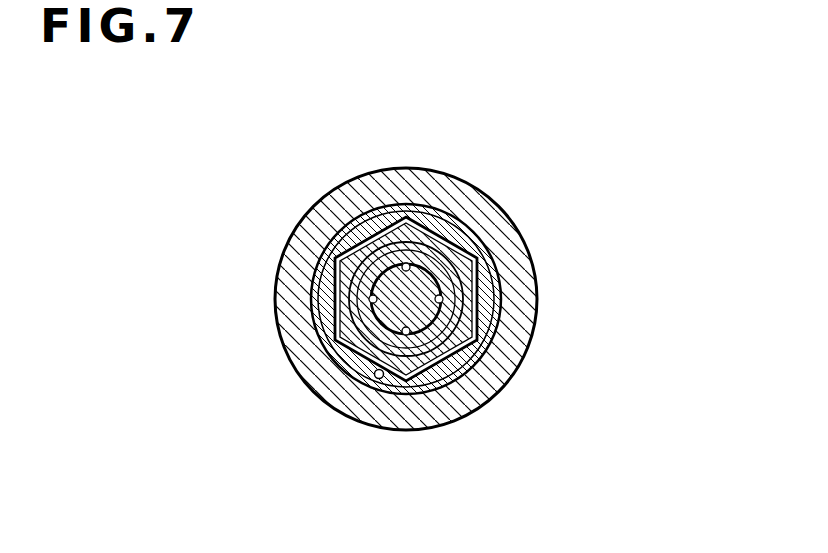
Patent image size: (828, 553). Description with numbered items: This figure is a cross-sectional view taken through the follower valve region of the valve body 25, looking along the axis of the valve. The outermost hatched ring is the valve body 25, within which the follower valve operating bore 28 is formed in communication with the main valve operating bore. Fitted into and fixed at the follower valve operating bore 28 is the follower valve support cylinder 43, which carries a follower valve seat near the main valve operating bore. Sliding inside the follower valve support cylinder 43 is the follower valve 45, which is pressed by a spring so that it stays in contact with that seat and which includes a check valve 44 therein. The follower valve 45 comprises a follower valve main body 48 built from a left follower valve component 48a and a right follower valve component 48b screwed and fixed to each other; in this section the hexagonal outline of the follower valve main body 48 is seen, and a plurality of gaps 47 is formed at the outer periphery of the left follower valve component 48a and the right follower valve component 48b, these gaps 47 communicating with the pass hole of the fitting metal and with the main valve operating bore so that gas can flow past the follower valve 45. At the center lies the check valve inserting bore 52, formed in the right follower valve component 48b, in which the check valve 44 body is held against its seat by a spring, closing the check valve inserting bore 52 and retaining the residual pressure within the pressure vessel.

The valve body 25 is at (540, 332).
The follower valve operating bore 28 is at (379, 379).
The follower valve support cylinder 43 is at (465, 418).
The check valve 44 is at (355, 376).
The follower valve 45 is at (330, 201).
The gap 47 is at (322, 292).
The follower valve main body 48 is at (518, 255).
The left follower valve component 48a is at (460, 253).
The right follower valve component 48b is at (477, 290).
The check valve inserting bore 52 is at (405, 266).